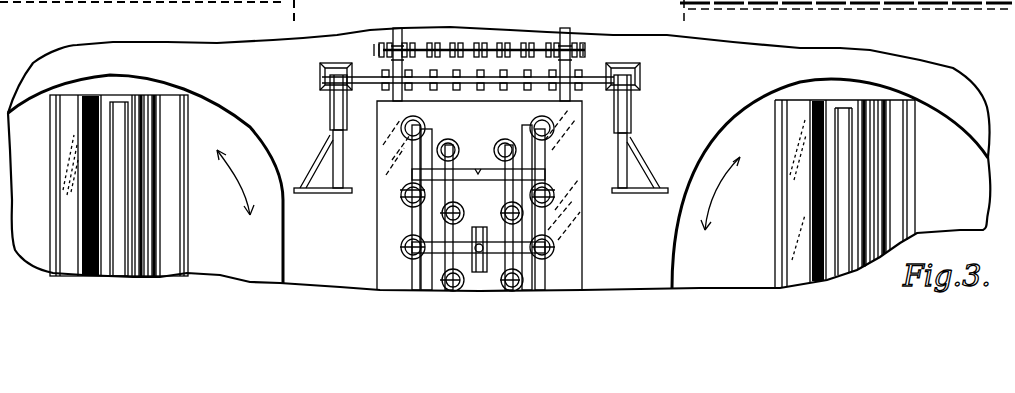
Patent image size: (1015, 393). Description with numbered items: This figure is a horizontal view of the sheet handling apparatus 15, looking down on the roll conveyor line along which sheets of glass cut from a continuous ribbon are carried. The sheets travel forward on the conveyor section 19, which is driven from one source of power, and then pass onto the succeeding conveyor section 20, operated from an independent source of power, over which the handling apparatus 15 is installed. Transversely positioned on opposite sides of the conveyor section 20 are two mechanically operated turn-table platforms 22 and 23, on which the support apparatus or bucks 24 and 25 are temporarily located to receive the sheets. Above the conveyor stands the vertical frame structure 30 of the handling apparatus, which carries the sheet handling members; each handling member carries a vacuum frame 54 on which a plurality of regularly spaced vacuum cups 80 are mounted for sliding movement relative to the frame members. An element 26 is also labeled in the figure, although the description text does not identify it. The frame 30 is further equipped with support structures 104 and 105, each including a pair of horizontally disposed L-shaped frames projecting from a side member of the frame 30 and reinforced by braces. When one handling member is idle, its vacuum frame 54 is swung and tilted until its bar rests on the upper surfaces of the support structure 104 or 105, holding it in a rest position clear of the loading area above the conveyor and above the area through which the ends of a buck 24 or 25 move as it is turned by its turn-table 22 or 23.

The handling apparatus 15 is at (598, 69).
The conveyor section 19 is at (380, 50).
The conveyor section 20 is at (568, 95).
The turn-table platform 22 is at (760, 126).
The turn-table platform 23 is at (218, 138).
The buck 24 is at (868, 183).
The buck 25 is at (136, 212).
The frame 26 is at (398, 154).
The frame 30 is at (322, 73).
The vacuum frame 54 is at (417, 213).
The vacuum cups 80 is at (549, 188).
The support structure 104 is at (656, 157).
The support structure 105 is at (314, 156).